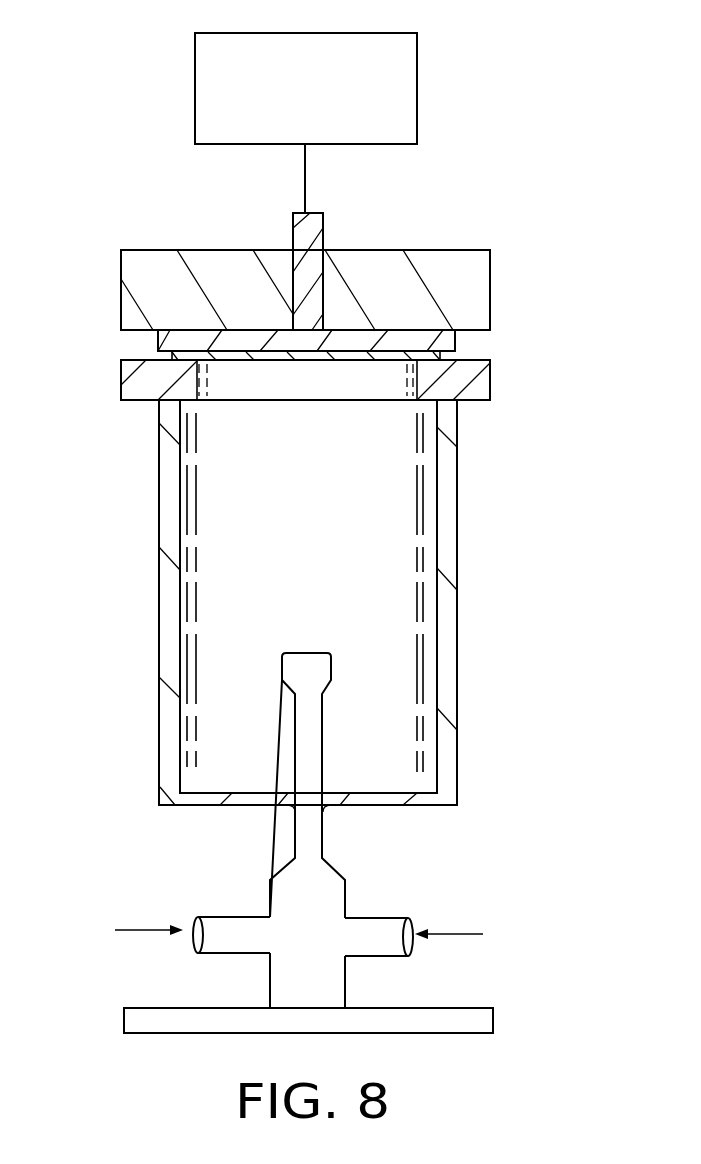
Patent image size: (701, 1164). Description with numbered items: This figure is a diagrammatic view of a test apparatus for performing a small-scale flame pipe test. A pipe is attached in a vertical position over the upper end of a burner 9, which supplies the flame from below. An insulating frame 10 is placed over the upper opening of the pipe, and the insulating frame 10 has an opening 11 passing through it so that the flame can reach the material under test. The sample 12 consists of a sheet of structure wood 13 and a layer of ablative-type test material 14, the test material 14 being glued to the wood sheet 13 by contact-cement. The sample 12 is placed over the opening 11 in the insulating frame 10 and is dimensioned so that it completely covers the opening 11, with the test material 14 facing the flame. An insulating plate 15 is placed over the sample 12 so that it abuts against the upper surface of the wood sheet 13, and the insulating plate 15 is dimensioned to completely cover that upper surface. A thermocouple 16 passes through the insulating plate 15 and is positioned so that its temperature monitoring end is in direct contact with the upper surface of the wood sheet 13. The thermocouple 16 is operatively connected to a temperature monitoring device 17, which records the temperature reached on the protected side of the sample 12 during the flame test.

The burner 9 is at (452, 553).
The insulating frame 10 is at (345, 888).
The opening 11 is at (490, 377).
The sample 12 is at (293, 391).
The sheet of structure wood 13 is at (478, 347).
The layer of ablative-type test material 14 is at (485, 253).
The insulating plate 15 is at (323, 230).
The thermocouple 16 is at (305, 195).
The temperature monitoring device 17 is at (417, 52).